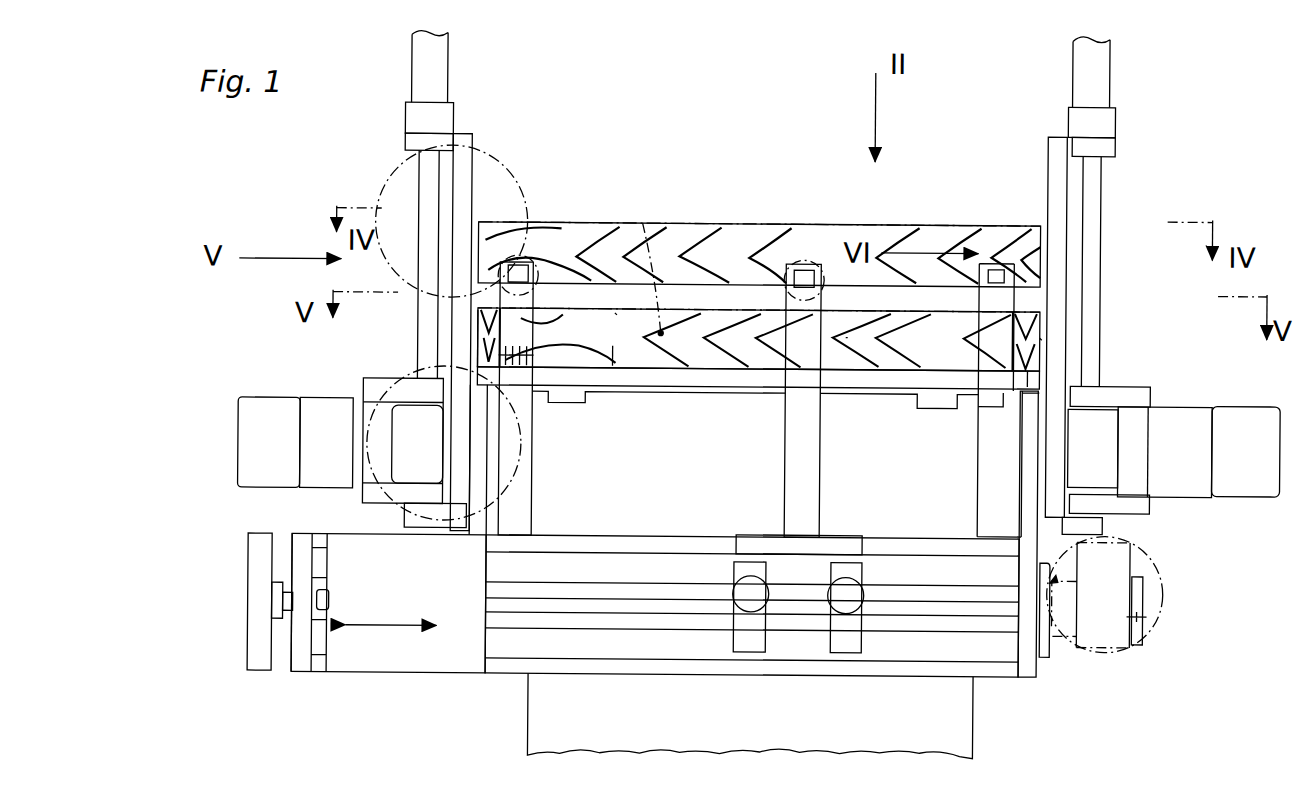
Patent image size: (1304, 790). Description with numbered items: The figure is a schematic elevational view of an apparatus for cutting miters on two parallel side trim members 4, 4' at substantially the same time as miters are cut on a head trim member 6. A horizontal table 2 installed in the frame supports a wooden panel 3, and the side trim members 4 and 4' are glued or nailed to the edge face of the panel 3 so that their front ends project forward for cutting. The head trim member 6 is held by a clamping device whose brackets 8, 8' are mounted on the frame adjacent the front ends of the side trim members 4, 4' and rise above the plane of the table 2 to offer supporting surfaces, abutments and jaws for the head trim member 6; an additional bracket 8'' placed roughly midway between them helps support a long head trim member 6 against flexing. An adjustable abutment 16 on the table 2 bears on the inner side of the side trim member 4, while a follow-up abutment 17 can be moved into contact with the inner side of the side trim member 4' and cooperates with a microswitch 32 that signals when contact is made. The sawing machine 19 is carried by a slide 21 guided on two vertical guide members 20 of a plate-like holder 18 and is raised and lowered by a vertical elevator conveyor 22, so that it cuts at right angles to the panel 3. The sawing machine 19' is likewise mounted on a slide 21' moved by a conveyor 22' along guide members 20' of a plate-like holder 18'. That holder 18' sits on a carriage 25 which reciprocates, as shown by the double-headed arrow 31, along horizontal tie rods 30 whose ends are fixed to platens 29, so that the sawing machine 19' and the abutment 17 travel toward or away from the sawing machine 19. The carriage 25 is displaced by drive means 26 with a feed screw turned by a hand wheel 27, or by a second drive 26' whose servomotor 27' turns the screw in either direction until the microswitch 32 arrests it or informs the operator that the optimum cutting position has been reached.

The horizontal table 2 is at (908, 379).
The panel 3 is at (641, 224).
The side trim member 4 is at (1092, 319).
The side trim member 4' is at (414, 338).
The head trim member 6 is at (691, 252).
The supporting element (bracket) 8 is at (758, 339).
The supporting element (bracket) 8' is at (603, 354).
The additional bracket 8'' is at (863, 343).
The abutment 16 is at (1027, 383).
The follow-up abutment 17 is at (614, 314).
The plate-like holder 18 is at (1009, 327).
The plate-like holder 18' is at (508, 330).
The sawing machine 19 is at (1198, 405).
The sawing machine 19' is at (254, 422).
The vertical guide members 20 is at (1127, 247).
The guide members 20' is at (389, 314).
The slide 21 is at (1120, 433).
The slide 21' is at (329, 406).
The vertical elevator conveyor 22 is at (1059, 71).
The conveyor 22' is at (467, 66).
The carriage 25 is at (461, 658).
The drive means 26 is at (228, 601).
The second drive 26' is at (1132, 613).
The hand wheel 27 is at (241, 623).
The servomotor 27' is at (1175, 611).
The platen 29 is at (304, 666).
The horizontal guide members (tie rods) 30 is at (613, 568).
The double-headed arrow 31 is at (394, 628).
The microswitch 32 is at (481, 355).